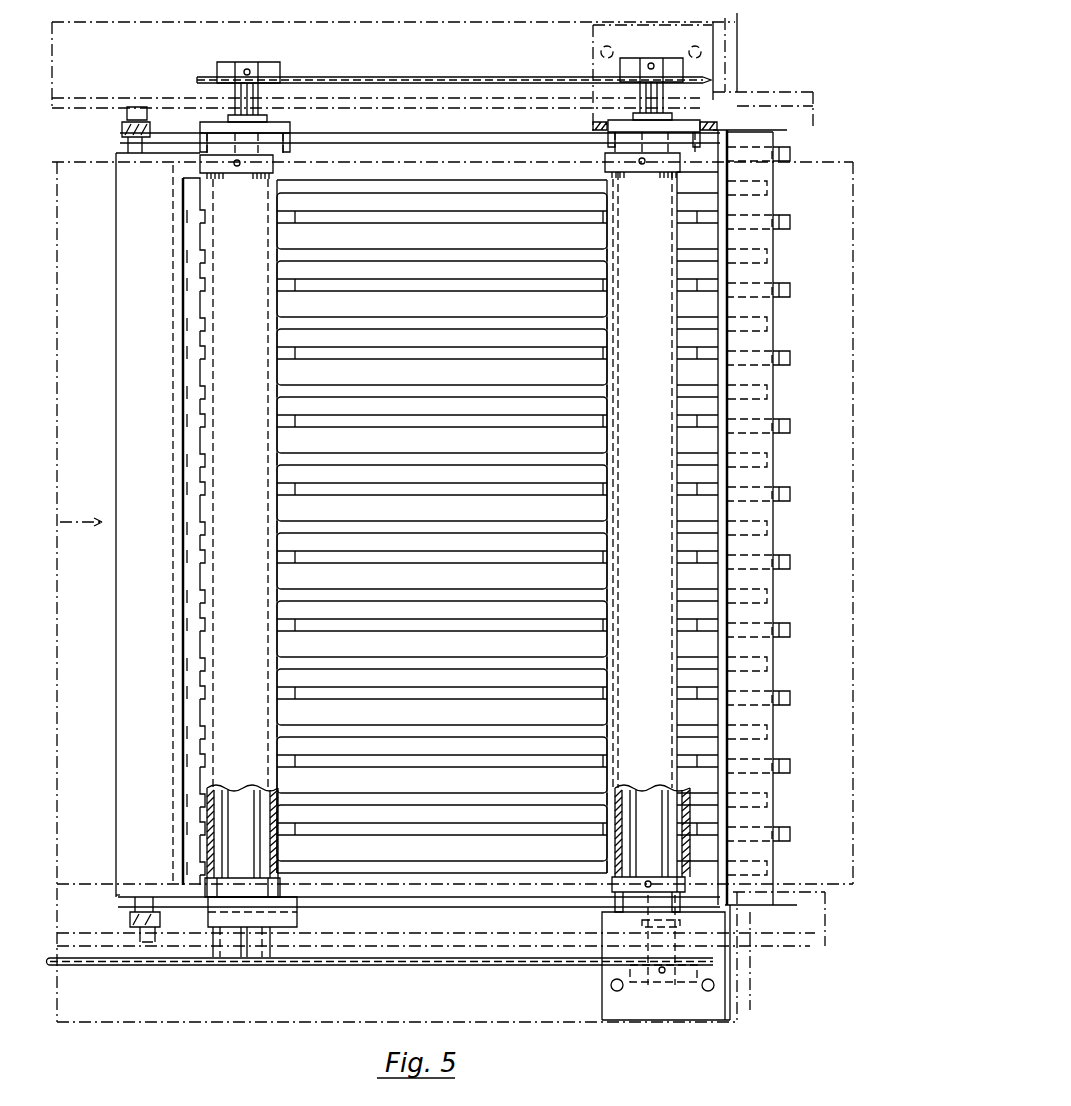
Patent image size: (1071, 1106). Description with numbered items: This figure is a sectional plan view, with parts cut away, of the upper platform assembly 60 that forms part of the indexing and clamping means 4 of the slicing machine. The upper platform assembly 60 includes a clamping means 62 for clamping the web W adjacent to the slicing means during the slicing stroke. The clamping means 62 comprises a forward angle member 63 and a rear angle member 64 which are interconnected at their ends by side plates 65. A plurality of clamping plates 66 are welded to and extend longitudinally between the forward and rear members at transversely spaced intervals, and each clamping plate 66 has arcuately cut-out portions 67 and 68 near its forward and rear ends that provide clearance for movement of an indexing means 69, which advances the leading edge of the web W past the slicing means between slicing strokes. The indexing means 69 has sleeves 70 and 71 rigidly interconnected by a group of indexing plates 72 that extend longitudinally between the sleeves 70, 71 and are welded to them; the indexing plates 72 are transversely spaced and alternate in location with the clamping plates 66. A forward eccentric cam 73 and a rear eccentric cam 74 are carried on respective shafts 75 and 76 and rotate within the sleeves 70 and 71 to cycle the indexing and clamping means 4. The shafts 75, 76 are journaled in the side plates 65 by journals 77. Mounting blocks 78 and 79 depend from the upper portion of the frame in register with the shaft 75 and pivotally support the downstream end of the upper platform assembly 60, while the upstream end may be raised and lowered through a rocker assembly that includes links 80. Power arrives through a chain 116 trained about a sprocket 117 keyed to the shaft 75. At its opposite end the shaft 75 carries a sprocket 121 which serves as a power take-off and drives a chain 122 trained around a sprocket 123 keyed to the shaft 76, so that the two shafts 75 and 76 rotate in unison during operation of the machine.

The indexing and clamping means 4 is at (118, 1038).
The web W is at (96, 154).
The upper platform assembly 60 is at (116, 911).
The clamping means 62 is at (791, 513).
The forward angle member 63 is at (757, 440).
The rear angle member 64 is at (125, 620).
The side plates 65 is at (488, 137).
The clamping plates 66 is at (525, 215).
The forward cut-out portion 67 is at (683, 212).
The rear cut-out portion 68 is at (292, 218).
The indexing means 69 is at (196, 657).
The sleeve 70 is at (611, 783).
The sleeve 71 is at (208, 822).
The indexing plates 72 is at (428, 252).
The forward eccentric cam 73 is at (638, 846).
The rear eccentric cam 74 is at (228, 852).
The shaft 75 is at (652, 60).
The shaft 76 is at (232, 72).
The journals 77 is at (292, 126).
The mounting block 78 is at (602, 1000).
The mounting block 79 is at (590, 40).
The links 80 is at (122, 128).
The chain 116 is at (388, 964).
The sprocket 117 is at (690, 975).
The sprocket 121 is at (622, 68).
The chain 122 is at (470, 76).
The sprocket 123 is at (266, 65).